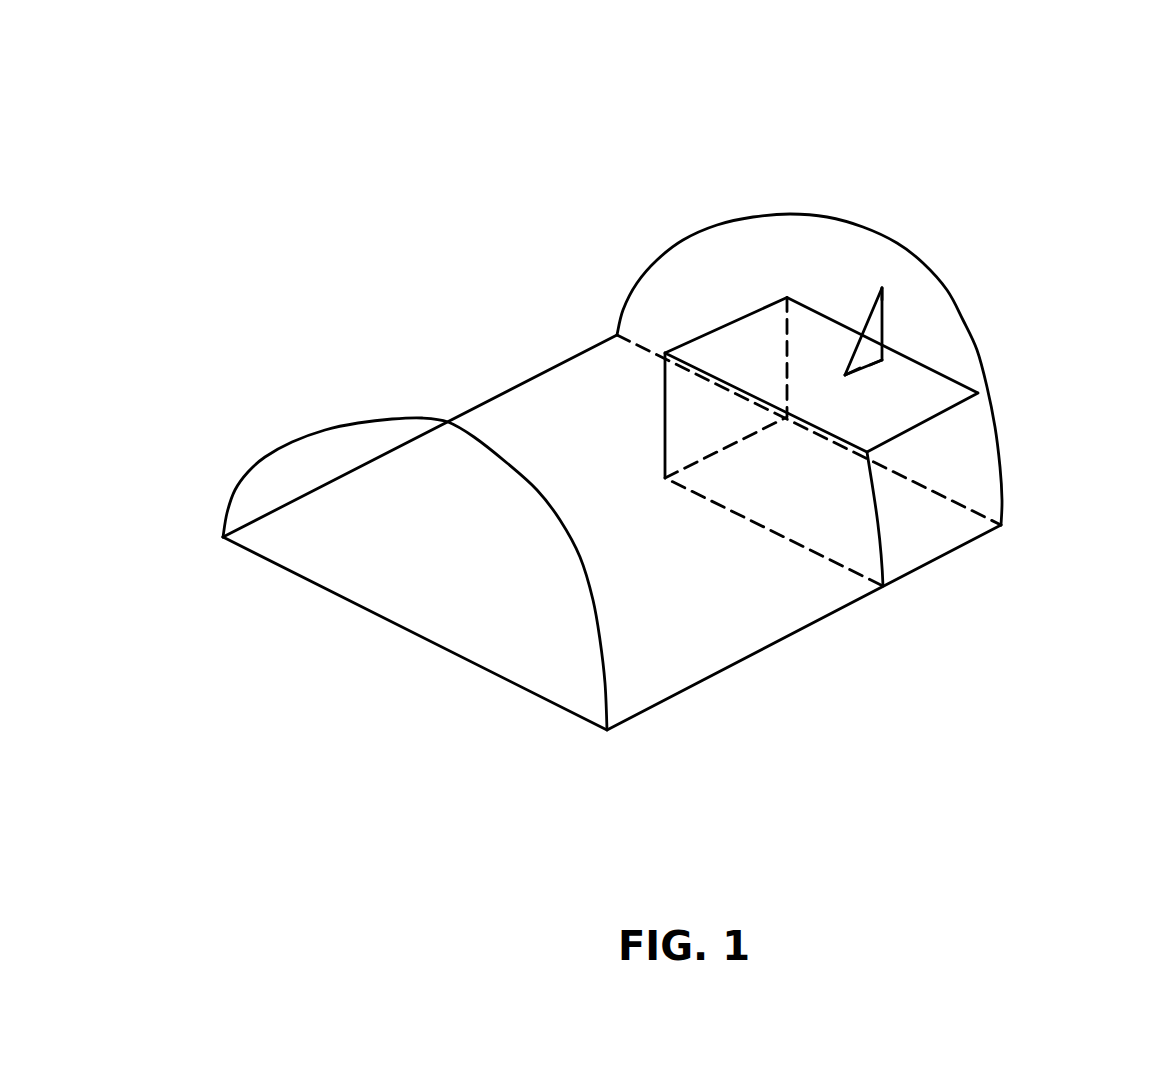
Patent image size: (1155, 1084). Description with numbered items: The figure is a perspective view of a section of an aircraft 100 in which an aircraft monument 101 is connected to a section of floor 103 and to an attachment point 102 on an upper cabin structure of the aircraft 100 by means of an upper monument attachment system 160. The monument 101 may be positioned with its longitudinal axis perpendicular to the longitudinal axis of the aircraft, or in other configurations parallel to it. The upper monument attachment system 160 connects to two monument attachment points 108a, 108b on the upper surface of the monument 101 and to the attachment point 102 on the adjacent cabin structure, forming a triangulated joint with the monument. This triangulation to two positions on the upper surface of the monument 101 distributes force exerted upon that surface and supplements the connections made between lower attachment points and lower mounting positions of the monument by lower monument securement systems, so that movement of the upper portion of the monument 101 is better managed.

The aircraft 100 is at (674, 385).
The aircraft monument 101 is at (978, 537).
The attachment point 102 is at (882, 288).
The floor 103 is at (555, 435).
The monument attachment point 108a is at (845, 376).
The monument attachment point 108b is at (882, 360).
The upper monument attachment system 160 is at (872, 318).